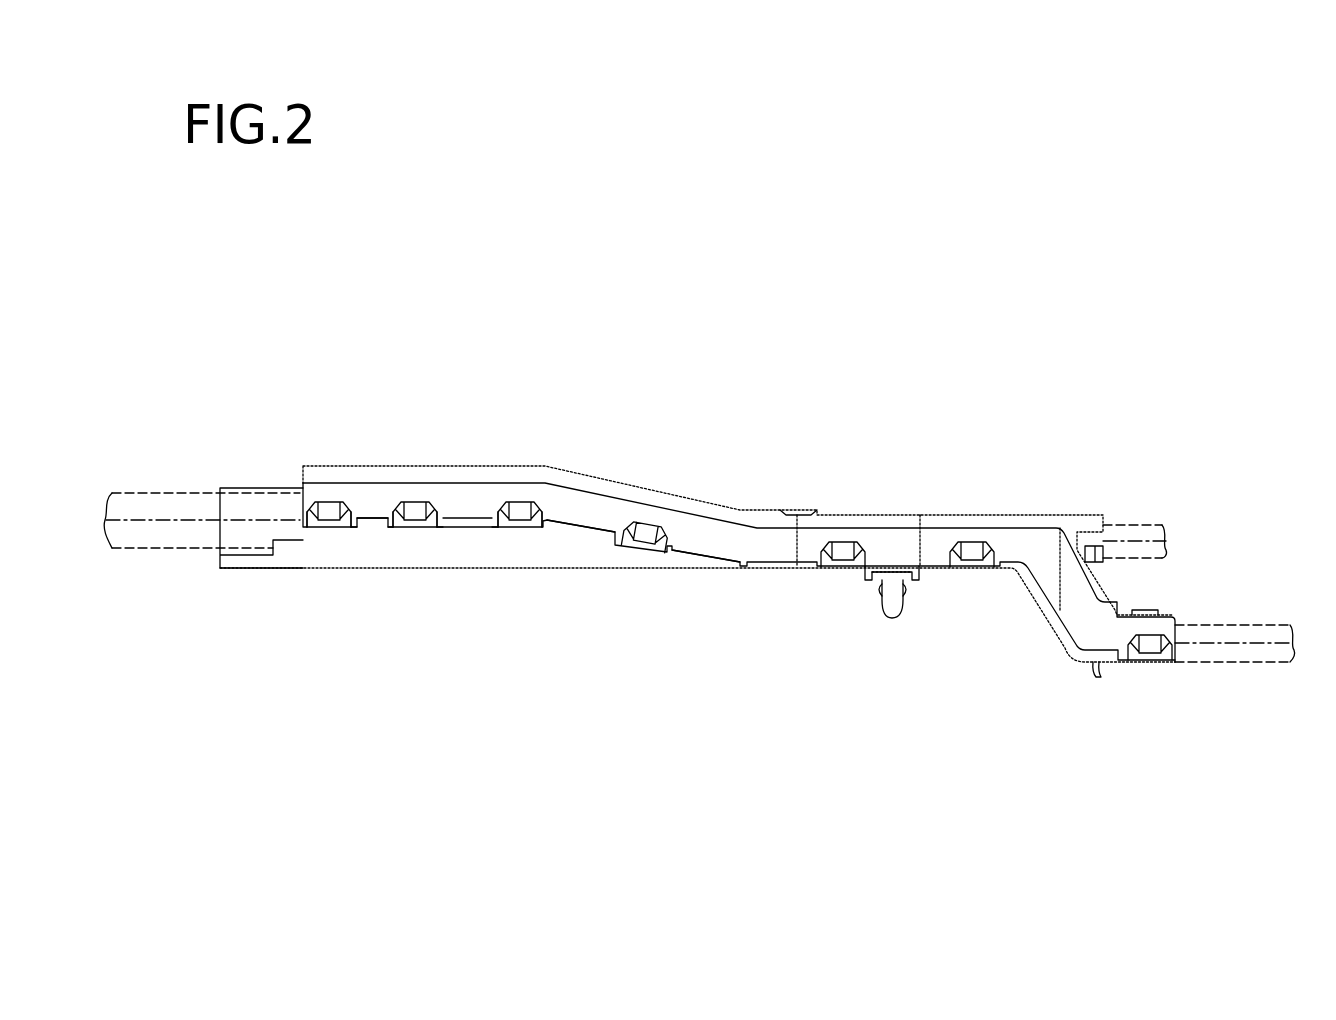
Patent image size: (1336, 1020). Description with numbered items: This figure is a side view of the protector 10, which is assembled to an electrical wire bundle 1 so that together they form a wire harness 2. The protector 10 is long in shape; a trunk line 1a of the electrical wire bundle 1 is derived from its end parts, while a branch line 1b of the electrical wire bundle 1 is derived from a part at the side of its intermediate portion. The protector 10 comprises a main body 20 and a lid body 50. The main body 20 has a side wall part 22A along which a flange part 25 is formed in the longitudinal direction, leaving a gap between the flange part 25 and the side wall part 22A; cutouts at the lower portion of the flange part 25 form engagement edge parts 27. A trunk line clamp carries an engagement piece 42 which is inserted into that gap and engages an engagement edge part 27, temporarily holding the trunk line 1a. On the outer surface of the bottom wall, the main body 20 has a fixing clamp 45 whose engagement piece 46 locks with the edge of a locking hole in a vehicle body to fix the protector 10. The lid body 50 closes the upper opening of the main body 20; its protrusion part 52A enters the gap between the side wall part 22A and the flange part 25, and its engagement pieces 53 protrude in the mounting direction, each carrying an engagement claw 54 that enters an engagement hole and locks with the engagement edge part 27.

The electrical wire bundle 1 is at (158, 486).
The trunk line 1a is at (207, 478).
The branch line 1b is at (1134, 521).
The wire harness 2 is at (431, 400).
The protector 10 is at (633, 455).
The main body 20 is at (510, 578).
The side wall part 22A is at (578, 558).
The flange part 25 is at (720, 548).
The engagement edge part 27 is at (330, 536).
The engagement piece 42 is at (434, 542).
The fixing clamp 45 is at (890, 619).
The engagement piece 46 is at (870, 592).
The lid body 50 is at (563, 460).
The protrusion part 52A is at (717, 507).
The engagement piece 53 is at (348, 537).
The engagement claw 54 is at (325, 505).